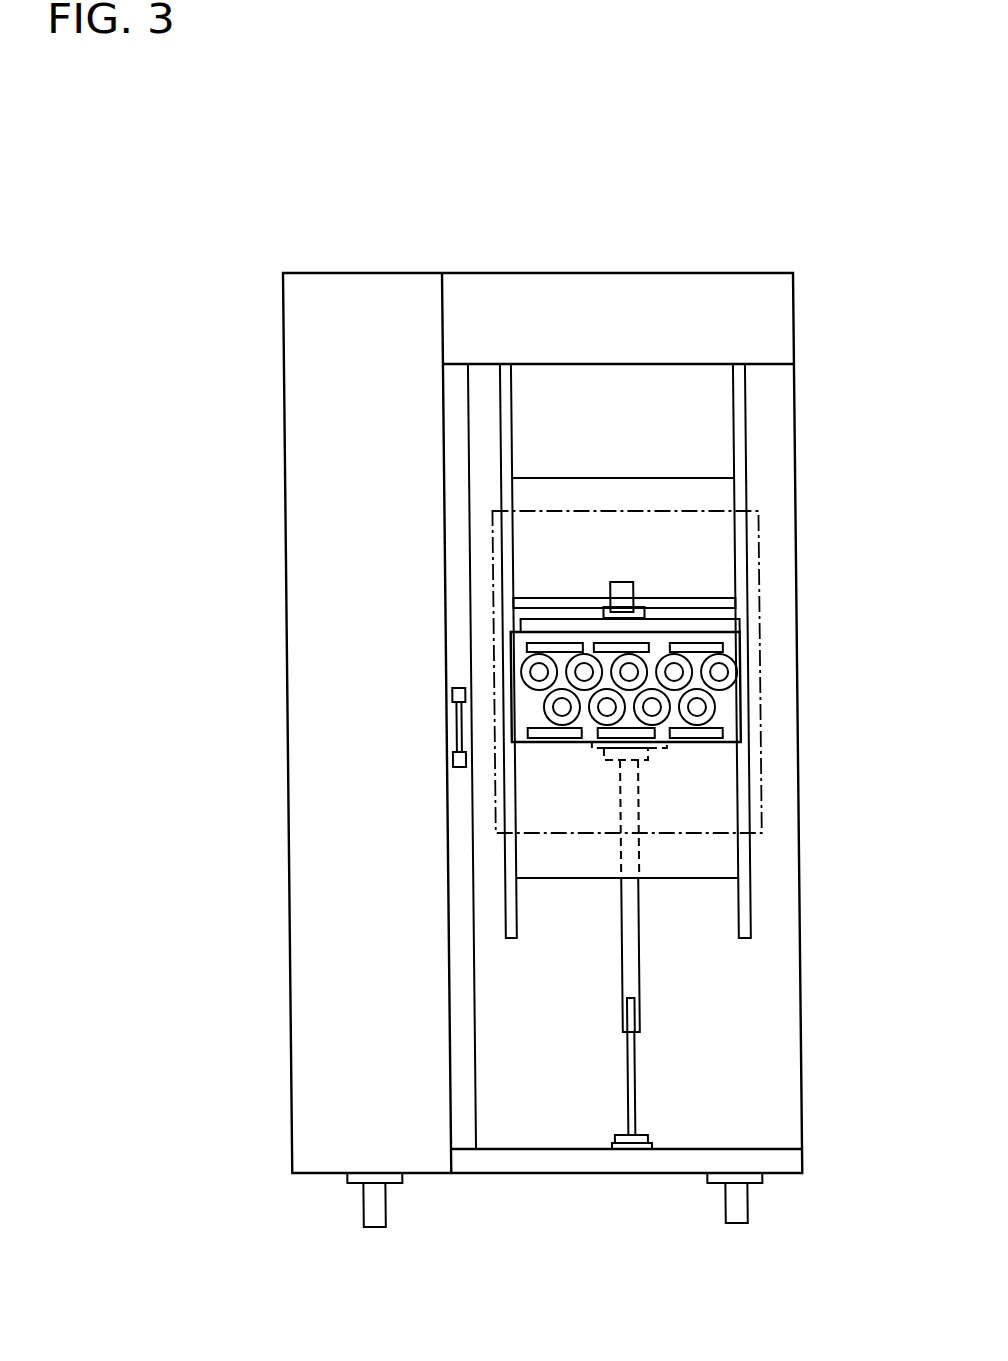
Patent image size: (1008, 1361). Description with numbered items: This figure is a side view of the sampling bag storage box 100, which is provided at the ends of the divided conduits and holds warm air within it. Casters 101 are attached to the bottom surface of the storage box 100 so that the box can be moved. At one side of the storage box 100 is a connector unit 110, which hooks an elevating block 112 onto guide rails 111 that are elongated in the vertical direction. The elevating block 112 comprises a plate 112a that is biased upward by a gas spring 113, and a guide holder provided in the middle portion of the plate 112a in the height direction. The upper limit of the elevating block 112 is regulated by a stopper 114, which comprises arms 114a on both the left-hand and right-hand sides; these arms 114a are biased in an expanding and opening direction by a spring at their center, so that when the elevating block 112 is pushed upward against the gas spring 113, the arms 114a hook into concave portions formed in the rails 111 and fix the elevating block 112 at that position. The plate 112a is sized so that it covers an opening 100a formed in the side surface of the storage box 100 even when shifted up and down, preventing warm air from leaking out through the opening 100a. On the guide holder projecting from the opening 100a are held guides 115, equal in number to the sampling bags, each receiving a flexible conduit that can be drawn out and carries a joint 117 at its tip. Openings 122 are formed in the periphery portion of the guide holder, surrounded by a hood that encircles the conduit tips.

The sampling bag storage box 100 is at (720, 258).
The opening 100a is at (562, 520).
The casters 101 is at (363, 1207).
The connector unit 110 is at (557, 782).
The guide rails 111 is at (510, 902).
The elevating block 112 is at (724, 699).
The plate 112a is at (576, 857).
The gas spring 113 is at (626, 862).
The stopper 114 is at (622, 590).
The arms 114a is at (540, 598).
The guides 115 is at (516, 673).
The joint 117 is at (542, 712).
The openings 122 is at (538, 742).